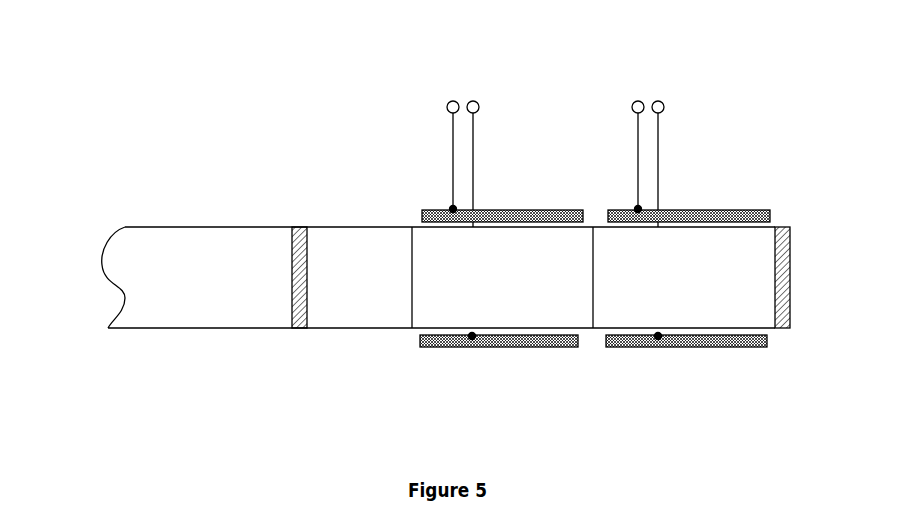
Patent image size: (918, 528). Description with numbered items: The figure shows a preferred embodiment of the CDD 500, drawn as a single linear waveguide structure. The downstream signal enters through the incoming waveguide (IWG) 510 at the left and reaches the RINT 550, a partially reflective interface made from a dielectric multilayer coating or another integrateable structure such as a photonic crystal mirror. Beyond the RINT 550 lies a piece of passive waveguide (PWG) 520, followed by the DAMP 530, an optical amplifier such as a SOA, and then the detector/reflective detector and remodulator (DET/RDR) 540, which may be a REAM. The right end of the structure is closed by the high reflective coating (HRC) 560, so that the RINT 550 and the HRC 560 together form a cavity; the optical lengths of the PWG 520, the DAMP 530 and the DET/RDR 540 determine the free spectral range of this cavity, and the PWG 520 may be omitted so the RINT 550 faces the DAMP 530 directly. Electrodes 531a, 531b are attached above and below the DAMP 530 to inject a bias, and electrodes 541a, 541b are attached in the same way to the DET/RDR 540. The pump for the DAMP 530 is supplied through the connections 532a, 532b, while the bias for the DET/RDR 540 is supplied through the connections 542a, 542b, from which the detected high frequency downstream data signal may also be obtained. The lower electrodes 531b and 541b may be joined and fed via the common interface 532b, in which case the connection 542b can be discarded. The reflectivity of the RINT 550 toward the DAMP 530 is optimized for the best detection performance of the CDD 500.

The CDD 500 is at (149, 422).
The incoming waveguide (IWG) 510 is at (153, 225).
The passive waveguide (PWG) 520 is at (353, 328).
The DAMP 530 is at (433, 278).
The electrode 531a is at (432, 206).
The electrode 531b is at (490, 348).
The connection 532a is at (448, 103).
The connection 532b is at (473, 100).
The detector/reflective detector and remodulator (DET/RDR) 540 is at (610, 302).
The electrode 541a is at (612, 206).
The electrode 541b is at (675, 348).
The connection 542a is at (633, 101).
The connection 542b is at (658, 100).
The RINT 550 is at (290, 292).
The high reflective coating (HRC) 560 is at (793, 291).